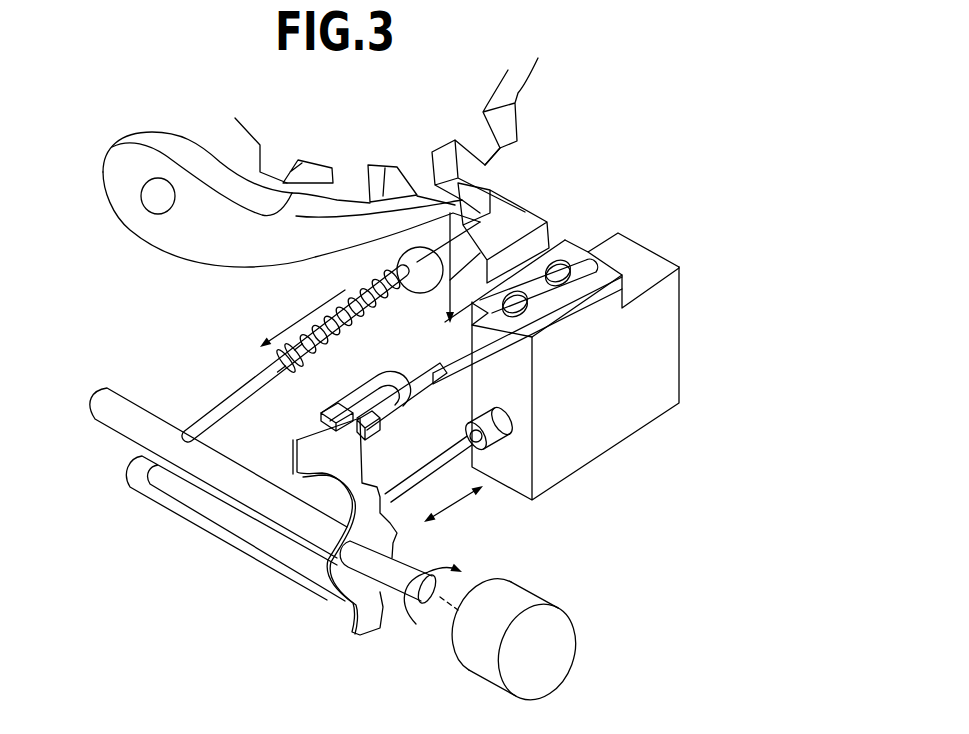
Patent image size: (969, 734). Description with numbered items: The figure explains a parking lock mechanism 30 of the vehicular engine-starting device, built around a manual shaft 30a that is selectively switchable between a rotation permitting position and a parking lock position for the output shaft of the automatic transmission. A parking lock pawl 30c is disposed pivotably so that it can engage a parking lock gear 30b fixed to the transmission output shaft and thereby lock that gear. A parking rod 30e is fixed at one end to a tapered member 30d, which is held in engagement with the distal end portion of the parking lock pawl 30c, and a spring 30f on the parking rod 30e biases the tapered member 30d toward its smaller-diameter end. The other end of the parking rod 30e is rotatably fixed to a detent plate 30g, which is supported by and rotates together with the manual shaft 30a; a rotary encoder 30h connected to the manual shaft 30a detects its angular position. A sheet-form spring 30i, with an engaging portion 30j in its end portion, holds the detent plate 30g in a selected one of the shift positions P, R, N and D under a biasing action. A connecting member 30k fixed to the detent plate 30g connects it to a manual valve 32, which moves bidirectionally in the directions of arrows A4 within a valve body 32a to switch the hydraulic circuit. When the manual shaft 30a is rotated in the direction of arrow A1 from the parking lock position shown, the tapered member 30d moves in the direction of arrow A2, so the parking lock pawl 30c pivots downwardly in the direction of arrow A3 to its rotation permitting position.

The parking lock mechanism 30 is at (608, 212).
The manual shaft 30a is at (113, 419).
The parking lock gear 30b is at (512, 127).
The parking lock pawl 30c is at (213, 249).
The tapered member 30d is at (394, 268).
The parking rod 30e is at (213, 417).
The spring 30f is at (325, 349).
The detent plate 30g is at (362, 622).
The rotary encoder 30h is at (521, 600).
The spring in the form of a sheet 30i is at (362, 381).
The engaging portion 30j is at (392, 427).
The connecting member 30k is at (420, 468).
The manual valve 32 is at (473, 422).
The valve body 32a is at (679, 404).
The arrow A1 is at (433, 583).
The arrow A2 is at (302, 318).
The arrow A3 is at (436, 268).
The arrows A4 is at (453, 509).